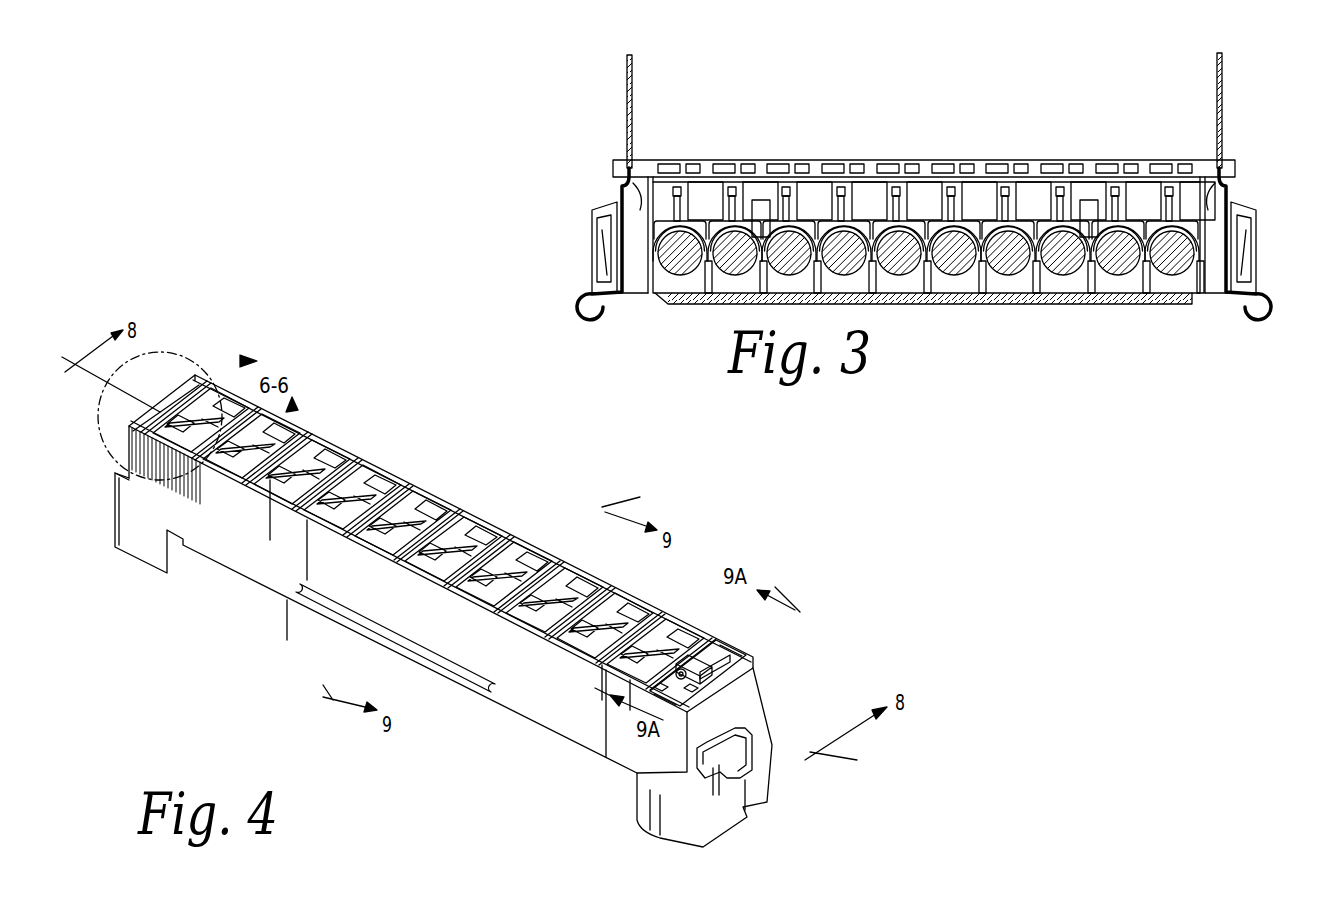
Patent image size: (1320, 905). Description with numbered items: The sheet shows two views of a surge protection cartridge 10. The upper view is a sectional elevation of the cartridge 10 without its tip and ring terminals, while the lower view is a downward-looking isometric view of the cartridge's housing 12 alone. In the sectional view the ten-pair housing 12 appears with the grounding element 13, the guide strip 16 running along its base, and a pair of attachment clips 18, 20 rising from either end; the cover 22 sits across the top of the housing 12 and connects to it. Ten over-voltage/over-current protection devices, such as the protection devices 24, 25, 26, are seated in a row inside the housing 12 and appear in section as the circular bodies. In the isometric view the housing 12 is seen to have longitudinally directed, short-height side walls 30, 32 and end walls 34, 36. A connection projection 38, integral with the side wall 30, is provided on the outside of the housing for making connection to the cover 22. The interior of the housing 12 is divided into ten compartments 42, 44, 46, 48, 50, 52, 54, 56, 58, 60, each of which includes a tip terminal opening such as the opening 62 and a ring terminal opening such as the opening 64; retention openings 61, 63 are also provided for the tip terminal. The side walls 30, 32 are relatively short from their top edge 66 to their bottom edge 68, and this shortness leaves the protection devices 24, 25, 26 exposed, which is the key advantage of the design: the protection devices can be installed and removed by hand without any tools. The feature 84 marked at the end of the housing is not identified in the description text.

In FIG. 3, the surge protection cartridge 10 is at (928, 126).
In FIG. 3, the ten-pair housing 12 is at (1072, 166).
In FIG. 4, the ten-pair housing 12 is at (229, 588).
In FIG. 3, the grounding element 13 is at (1228, 192).
In FIG. 3, the guide strip 16 is at (977, 303).
In FIG. 3, the attachment clip 18 is at (633, 63).
In FIG. 3, the attachment clip 20 is at (1223, 58).
In FIG. 3, the cover 22 is at (1019, 300).
In FIG. 3, the over-voltage/over-current protection device 24 is at (1177, 258).
In FIG. 3, the over-voltage/over-current protection device 25 is at (1118, 262).
In FIG. 3, the over-voltage/over-current protection device 26 is at (1063, 262).
In FIG. 4, the side wall 30 is at (565, 725).
In FIG. 4, the side wall 32 is at (708, 655).
In FIG. 4, the end wall 34 is at (145, 412).
In FIG. 4, the end wall 36 is at (748, 687).
In FIG. 4, the connection projection 38 is at (395, 640).
In FIG. 4, the compartment 42 is at (222, 405).
In FIG. 4, the compartment 44 is at (273, 437).
In FIG. 4, the compartment 46 is at (300, 465).
In FIG. 4, the compartment 48 is at (365, 487).
In FIG. 4, the compartment 50 is at (415, 508).
In FIG. 4, the compartment 52 is at (465, 533).
In FIG. 4, the compartment 54 is at (513, 558).
In FIG. 4, the compartment 56 is at (565, 585).
In FIG. 4, the compartment 58 is at (615, 607).
In FIG. 4, the compartment 60 is at (652, 632).
In FIG. 4, the retention opening 61 is at (700, 662).
In FIG. 4, the tip terminal opening 62 is at (685, 648).
In FIG. 4, the retention opening 63 is at (643, 623).
In FIG. 4, the ring terminal opening 64 is at (680, 637).
In FIG. 4, the top edge 66 is at (268, 482).
In FIG. 4, the bottom edge 68 is at (287, 598).
In FIG. 4, the end flange 84 is at (114, 512).